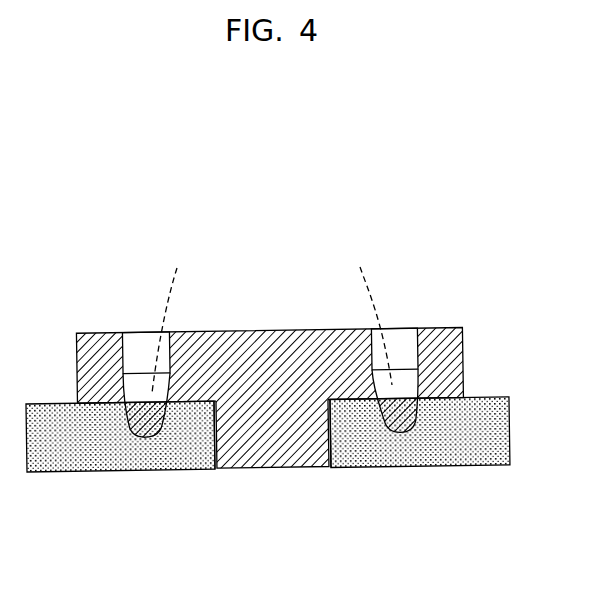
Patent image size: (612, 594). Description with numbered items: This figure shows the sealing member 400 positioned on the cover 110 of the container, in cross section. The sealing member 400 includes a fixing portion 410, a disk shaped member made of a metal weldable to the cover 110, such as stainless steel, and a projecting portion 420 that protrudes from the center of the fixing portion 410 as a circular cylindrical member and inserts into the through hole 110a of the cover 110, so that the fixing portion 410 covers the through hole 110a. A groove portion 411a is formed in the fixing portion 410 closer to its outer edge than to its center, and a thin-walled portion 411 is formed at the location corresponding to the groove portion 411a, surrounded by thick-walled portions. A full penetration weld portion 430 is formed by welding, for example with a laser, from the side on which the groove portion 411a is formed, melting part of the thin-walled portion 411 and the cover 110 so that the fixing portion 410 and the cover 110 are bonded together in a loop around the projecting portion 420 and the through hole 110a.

The sealing member 400 is at (489, 290).
The fixing portion 410 is at (463, 355).
The thin-walled portion 411 is at (272, 317).
The groove portion 411a is at (134, 332).
The projecting portion 420 is at (247, 457).
The full penetration weld portion 430 is at (145, 428).
The cover 110 is at (480, 452).
The through hole 110a is at (331, 467).